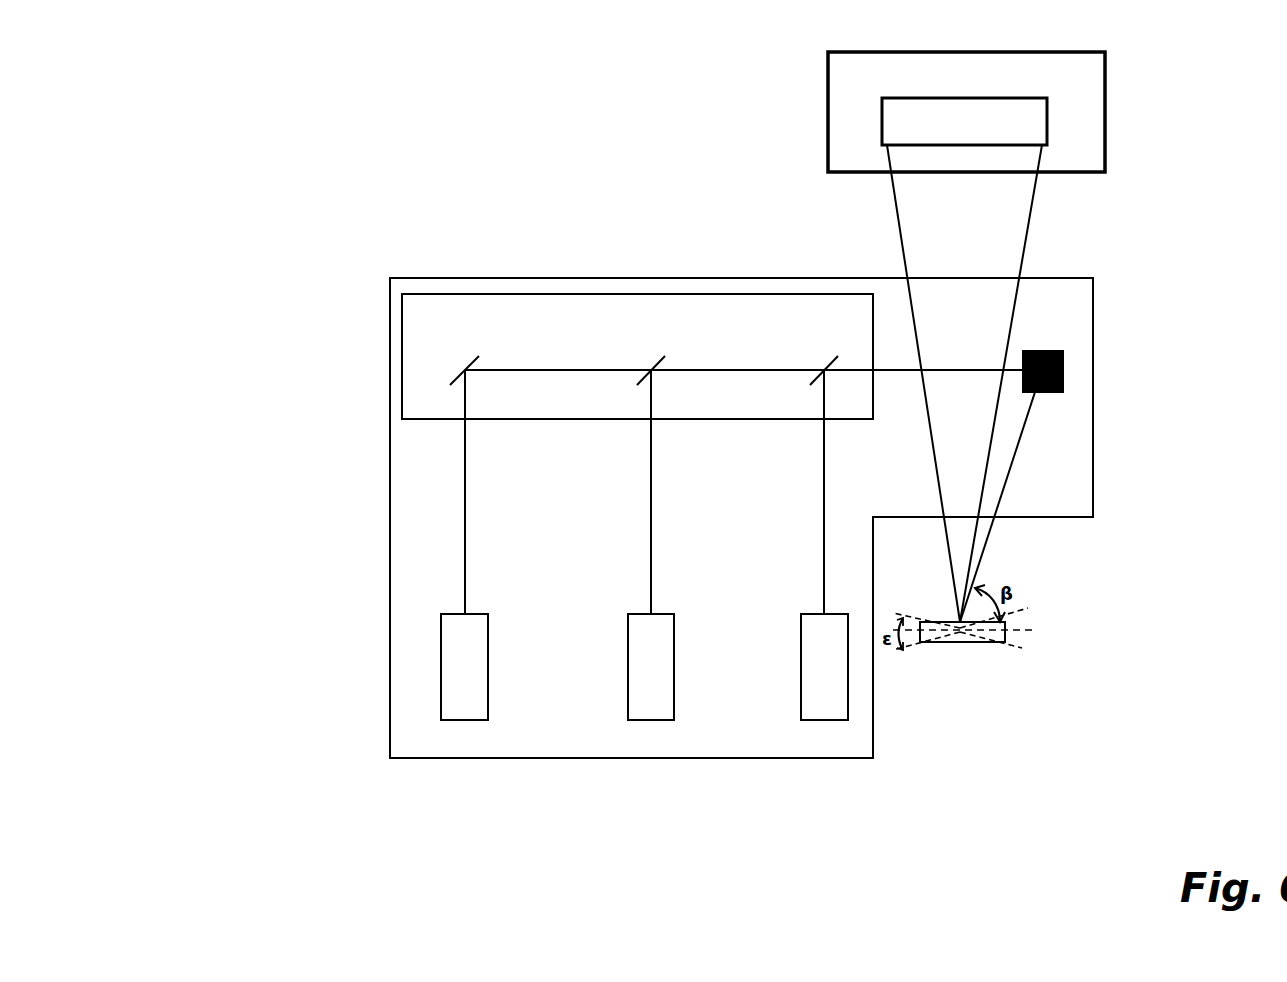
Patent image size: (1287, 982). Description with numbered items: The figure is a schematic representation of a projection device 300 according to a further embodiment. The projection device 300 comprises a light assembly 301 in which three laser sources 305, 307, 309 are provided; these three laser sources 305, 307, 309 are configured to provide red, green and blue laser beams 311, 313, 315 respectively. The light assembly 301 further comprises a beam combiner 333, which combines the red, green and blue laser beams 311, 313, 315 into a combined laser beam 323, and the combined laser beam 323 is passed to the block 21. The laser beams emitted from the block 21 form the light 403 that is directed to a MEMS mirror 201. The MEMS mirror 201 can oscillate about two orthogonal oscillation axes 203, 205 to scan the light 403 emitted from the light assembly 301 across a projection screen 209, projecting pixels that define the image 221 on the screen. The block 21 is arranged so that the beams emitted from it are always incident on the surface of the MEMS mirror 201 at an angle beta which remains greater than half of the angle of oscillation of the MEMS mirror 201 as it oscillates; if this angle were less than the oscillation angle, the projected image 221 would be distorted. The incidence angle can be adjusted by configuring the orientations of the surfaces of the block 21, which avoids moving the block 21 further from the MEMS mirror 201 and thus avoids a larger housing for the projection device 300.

The projection device 300 is at (350, 173).
The light assembly 301 is at (390, 480).
The beam combiner 333 is at (648, 294).
The red laser beam 311 is at (465, 485).
The green laser beam 313 is at (651, 440).
The blue laser beam 315 is at (824, 460).
The laser source 305 is at (447, 720).
The laser source 307 is at (637, 720).
The laser source 309 is at (810, 720).
The combined laser beam 323 is at (893, 370).
The projection screen 209 is at (1083, 95).
The image 221 is at (1015, 120).
The block 21 is at (1063, 355).
The light 403 is at (1027, 430).
The MEMS mirror 201 is at (937, 642).
The oscillation axis 205 is at (958, 642).
The oscillation axis 203 is at (1030, 630).